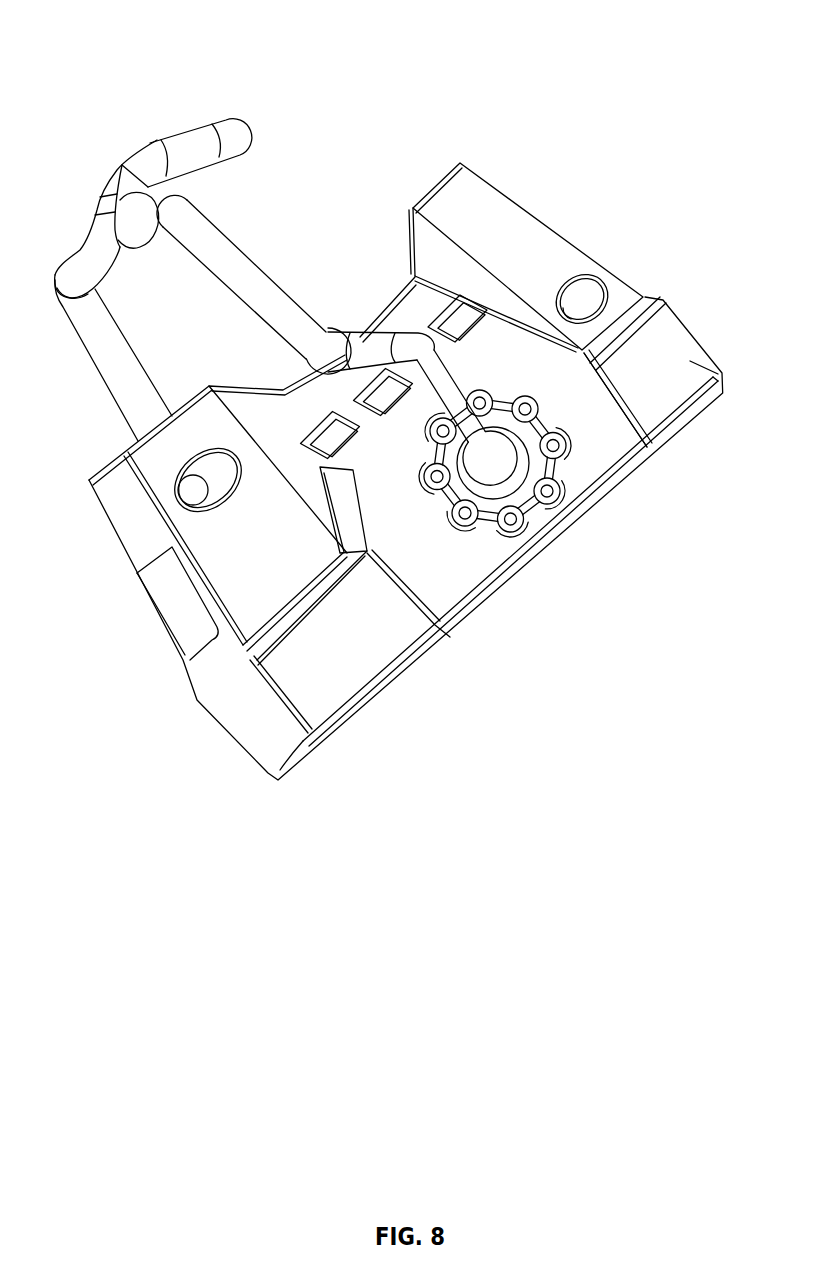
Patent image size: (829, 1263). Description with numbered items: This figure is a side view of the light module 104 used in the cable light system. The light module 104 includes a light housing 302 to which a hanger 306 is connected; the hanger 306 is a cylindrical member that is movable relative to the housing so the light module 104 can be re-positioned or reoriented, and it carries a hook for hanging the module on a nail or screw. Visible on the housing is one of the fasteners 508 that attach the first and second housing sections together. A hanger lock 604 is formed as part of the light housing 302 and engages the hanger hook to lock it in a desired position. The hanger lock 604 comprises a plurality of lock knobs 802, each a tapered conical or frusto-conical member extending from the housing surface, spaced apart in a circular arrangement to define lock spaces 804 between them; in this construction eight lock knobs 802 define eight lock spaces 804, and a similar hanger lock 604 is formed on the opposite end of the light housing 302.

The light module 104 is at (406, 401).
The light housing 302 is at (540, 243).
The hanger 306 is at (197, 147).
The fastener 508 is at (198, 490).
The hanger lock 604 is at (600, 466).
The lock knob 802 is at (462, 520).
The lock space 804 is at (535, 512).